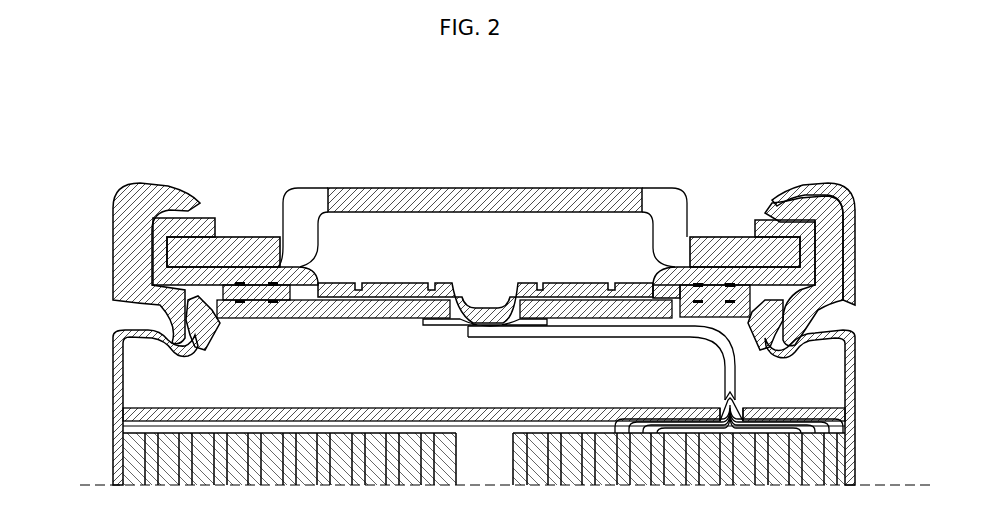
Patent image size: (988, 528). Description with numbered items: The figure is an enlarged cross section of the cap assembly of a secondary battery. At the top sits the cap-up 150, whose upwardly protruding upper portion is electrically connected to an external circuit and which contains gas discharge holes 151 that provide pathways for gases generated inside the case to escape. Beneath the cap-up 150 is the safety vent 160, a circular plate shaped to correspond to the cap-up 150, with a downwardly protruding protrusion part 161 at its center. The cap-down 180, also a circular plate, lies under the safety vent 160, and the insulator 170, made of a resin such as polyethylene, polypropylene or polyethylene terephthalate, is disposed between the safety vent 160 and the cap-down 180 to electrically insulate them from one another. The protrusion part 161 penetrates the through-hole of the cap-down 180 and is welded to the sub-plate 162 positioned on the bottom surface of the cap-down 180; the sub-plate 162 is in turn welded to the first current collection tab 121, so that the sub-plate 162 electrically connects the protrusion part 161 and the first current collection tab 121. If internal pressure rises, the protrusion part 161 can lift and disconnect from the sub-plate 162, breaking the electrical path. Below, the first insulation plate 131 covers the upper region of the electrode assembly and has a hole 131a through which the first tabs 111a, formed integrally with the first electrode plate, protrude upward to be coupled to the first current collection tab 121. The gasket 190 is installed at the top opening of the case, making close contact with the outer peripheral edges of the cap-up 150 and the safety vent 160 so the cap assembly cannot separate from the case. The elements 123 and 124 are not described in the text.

The first tabs 111a is at (740, 435).
The first current collection tab 121 is at (740, 375).
The case side wall 123 is at (113, 375).
The case crimped top portion 124 is at (847, 193).
The first insulation plate 131 is at (123, 414).
The hole 131a is at (740, 400).
The cap-up 150 is at (441, 200).
The gas discharge holes 151 is at (313, 187).
The safety vent 160 is at (725, 245).
The protrusion part 161 is at (485, 303).
The sub-plate 162 is at (601, 292).
The insulator 170 is at (240, 255).
The cap-down 180 is at (377, 300).
The gasket 190 is at (835, 245).